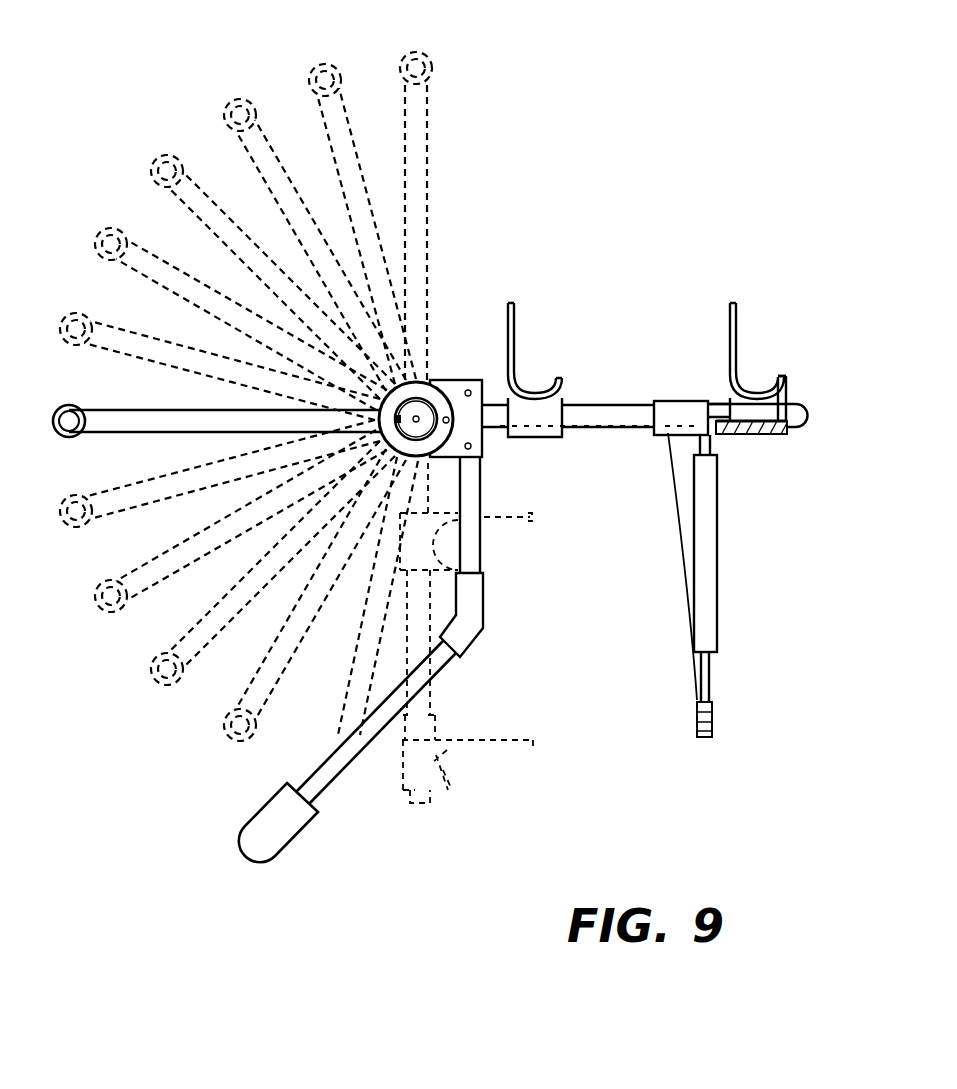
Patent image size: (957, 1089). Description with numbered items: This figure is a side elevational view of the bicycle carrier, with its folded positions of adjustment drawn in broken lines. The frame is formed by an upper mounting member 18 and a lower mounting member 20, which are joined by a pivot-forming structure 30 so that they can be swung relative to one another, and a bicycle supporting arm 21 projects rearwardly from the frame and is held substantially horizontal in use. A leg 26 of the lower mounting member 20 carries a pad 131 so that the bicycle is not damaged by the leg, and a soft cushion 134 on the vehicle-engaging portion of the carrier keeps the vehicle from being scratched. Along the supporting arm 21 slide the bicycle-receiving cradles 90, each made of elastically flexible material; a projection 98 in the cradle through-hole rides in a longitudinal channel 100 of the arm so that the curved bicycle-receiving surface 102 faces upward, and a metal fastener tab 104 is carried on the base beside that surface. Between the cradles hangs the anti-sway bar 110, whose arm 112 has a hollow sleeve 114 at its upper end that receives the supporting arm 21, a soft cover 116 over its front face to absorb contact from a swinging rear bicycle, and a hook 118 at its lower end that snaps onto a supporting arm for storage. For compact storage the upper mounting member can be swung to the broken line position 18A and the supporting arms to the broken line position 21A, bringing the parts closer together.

The upper mounting member 18 is at (155, 448).
The broken line position of upper mounting member 18A is at (327, 718).
The lower mounting member 20 is at (432, 681).
The bicycle supporting arm 21 is at (606, 405).
The broken line position of supporting arms 21A is at (433, 762).
The leg portion 26 is at (478, 537).
The pivot-forming structure 30 is at (457, 353).
The bicycle-receiving cradle 90 is at (526, 348).
The projection 98 is at (755, 425).
The longitudinal channel 100 is at (723, 437).
The bicycle-receiving surface 102 is at (546, 390).
The metal fastener tab 104 is at (802, 386).
The anti-sway bar 110 is at (665, 612).
The arm 112 is at (683, 542).
The hollow sleeve 114 is at (662, 437).
The cover 116 is at (710, 551).
The hook 118 is at (708, 720).
The pad 131 is at (483, 632).
The soft cushion 134 is at (254, 822).